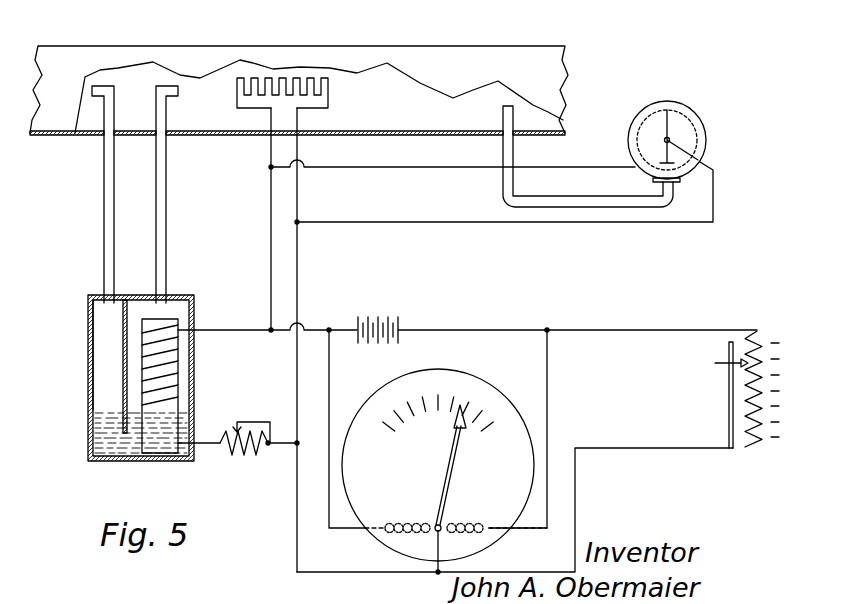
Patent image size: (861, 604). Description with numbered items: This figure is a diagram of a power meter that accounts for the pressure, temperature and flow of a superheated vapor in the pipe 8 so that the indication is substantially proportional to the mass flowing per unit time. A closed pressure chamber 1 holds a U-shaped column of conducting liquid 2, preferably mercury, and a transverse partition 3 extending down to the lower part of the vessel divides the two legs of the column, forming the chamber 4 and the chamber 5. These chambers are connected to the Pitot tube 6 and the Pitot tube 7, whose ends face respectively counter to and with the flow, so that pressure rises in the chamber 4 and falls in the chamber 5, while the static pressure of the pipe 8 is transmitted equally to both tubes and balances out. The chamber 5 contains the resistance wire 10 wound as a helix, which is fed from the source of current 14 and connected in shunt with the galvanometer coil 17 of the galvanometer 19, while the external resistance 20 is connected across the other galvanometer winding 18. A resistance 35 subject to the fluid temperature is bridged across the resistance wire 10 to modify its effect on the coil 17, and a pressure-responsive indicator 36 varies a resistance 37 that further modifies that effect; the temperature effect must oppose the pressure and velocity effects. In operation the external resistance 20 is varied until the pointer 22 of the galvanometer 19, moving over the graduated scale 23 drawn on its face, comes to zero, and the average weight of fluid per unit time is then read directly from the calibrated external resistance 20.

The closed pressure chamber 1 is at (181, 296).
The conducting liquid 2 is at (118, 440).
The transverse partition 3 is at (122, 354).
The chamber 4 is at (106, 326).
The chamber 5 is at (183, 351).
The Pitot tube 6 is at (101, 88).
The Pitot tube 7 is at (168, 90).
The pipe 8 is at (120, 73).
The resistance wire 10 is at (167, 385).
The source of current 14 is at (385, 315).
The galvanometer coil 17 is at (402, 524).
The galvanometer winding 18 is at (481, 522).
The galvanometer 19 is at (396, 541).
The external resistance 20 is at (774, 316).
The pointer 22 is at (450, 458).
The scale 23 is at (466, 410).
The resistance 35 is at (273, 81).
The indicator 36 is at (690, 118).
The resistance 37 is at (698, 137).